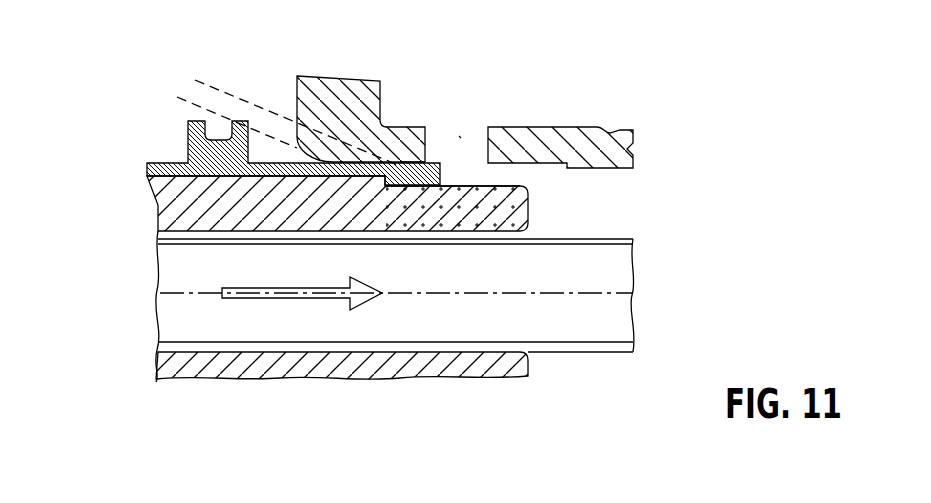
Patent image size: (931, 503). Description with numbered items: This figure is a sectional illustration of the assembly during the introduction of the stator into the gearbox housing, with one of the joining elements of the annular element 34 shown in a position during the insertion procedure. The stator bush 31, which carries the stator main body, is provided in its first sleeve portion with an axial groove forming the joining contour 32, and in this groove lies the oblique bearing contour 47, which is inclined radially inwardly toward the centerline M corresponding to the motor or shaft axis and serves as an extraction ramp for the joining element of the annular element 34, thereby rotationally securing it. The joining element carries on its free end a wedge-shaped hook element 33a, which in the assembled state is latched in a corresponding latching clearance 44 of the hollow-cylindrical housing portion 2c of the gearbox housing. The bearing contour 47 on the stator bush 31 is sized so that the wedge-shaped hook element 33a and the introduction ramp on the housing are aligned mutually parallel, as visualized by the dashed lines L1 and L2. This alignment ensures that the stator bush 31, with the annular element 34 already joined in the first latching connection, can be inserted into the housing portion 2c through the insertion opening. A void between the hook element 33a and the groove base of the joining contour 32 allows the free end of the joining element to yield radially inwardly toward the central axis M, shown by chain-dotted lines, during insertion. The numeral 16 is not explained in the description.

The annular element 34 is at (148, 173).
The stator bush 31 is at (170, 207).
The joining contour 32 is at (468, 184).
The fluid channel 16 is at (603, 268).
The centerline M is at (190, 293).
The bearing contour 47 is at (357, 172).
The hollow-cylindrical housing portion 2c is at (615, 130).
The latching clearance 44 is at (460, 137).
The wedge-shaped hook element 33a is at (445, 168).
The dashed line L1 is at (207, 88).
The dashed line L2 is at (188, 100).